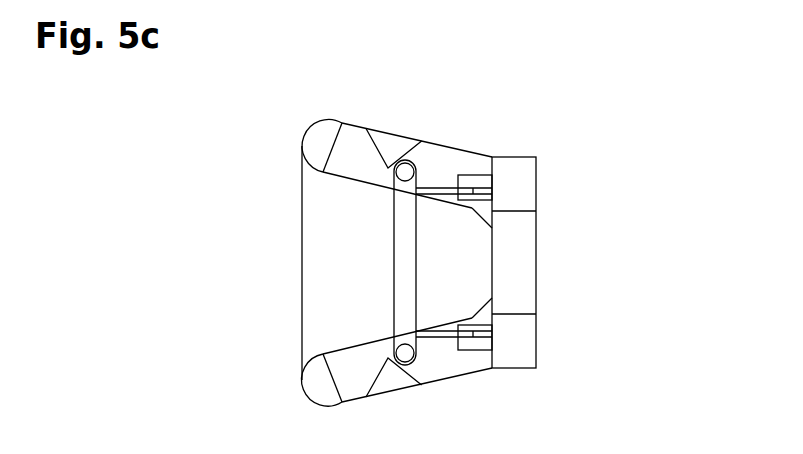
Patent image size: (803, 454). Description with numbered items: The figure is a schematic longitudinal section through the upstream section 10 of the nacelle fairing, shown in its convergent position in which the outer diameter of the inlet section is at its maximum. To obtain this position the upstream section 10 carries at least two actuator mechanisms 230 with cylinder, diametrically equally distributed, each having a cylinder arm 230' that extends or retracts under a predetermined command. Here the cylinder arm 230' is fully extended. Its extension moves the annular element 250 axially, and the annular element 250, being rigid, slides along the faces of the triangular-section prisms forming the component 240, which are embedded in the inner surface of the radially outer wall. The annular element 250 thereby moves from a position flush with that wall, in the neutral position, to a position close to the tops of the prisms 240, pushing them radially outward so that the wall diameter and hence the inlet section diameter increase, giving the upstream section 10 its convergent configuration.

The upstream section 10 is at (566, 158).
The actuator mechanism with cylinder 230 is at (541, 263).
The cylinder arm 230' is at (516, 259).
The component (prisms) 240 is at (400, 143).
The annular element 250 is at (407, 217).